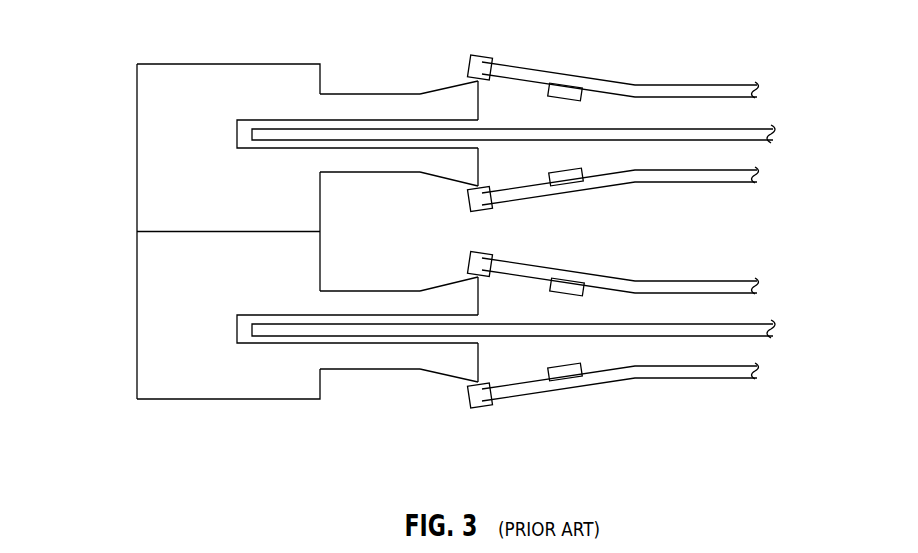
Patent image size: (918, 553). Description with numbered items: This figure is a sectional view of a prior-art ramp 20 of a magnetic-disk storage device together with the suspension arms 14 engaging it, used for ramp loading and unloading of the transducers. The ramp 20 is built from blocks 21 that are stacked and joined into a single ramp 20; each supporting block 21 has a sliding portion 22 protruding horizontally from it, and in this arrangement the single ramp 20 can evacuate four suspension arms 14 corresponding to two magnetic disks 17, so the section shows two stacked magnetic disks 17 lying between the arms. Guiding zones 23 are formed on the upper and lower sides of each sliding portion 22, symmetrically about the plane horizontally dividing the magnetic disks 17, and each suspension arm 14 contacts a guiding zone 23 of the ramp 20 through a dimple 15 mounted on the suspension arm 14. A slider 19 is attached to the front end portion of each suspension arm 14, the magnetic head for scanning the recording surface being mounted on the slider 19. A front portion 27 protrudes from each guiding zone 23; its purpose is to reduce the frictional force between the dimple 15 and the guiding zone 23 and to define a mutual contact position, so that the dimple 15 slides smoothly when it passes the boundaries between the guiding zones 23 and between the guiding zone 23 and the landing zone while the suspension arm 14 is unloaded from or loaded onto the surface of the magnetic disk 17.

The ramp 20 is at (98, 181).
The supporting portion 21 is at (251, 80).
The sliding portion 22 is at (396, 60).
The guiding zone 23 is at (363, 93).
The front portion 27 is at (467, 100).
The magnetic disk 17 is at (757, 130).
The suspension arm 14 is at (657, 88).
The dimple 15 is at (481, 68).
The slider 19 is at (568, 89).